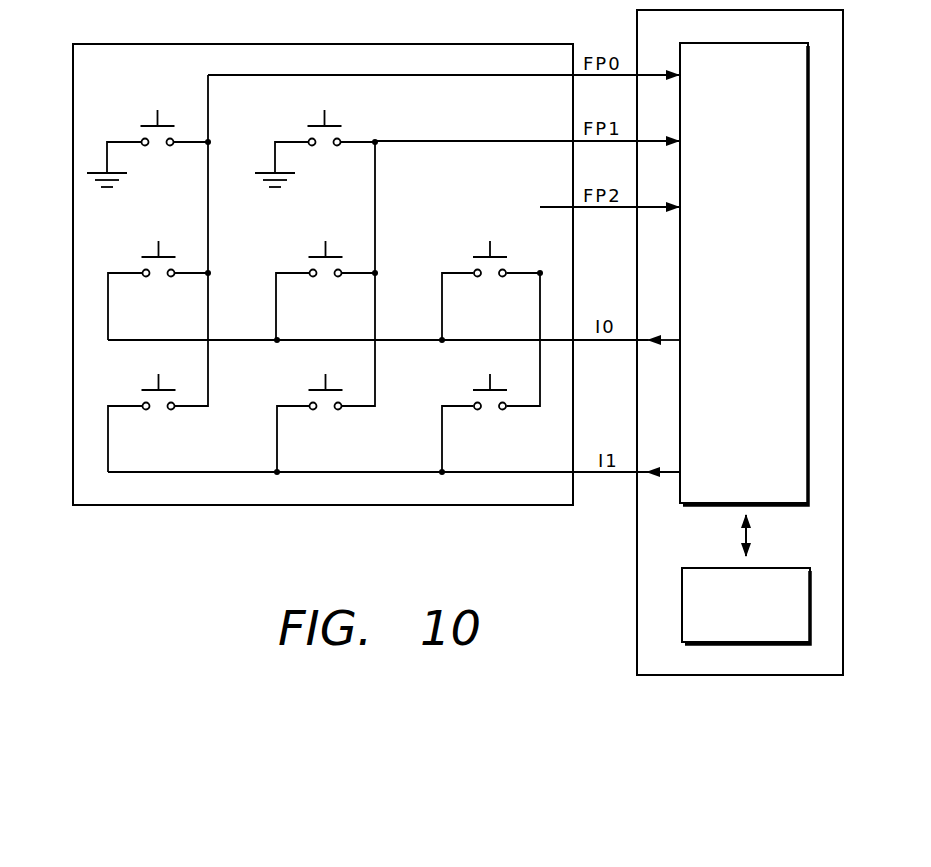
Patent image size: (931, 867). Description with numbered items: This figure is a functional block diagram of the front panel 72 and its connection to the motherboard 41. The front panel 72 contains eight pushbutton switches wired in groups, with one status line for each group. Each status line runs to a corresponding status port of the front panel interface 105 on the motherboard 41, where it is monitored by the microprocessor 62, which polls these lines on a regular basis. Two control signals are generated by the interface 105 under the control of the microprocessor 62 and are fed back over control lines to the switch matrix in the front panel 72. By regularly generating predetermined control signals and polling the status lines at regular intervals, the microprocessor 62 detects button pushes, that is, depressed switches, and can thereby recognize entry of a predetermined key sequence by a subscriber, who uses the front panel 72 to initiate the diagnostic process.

The front panel 72 is at (455, 505).
The motherboard 41 is at (637, 607).
The front panel interface 105 is at (758, 278).
The microprocessor 62 is at (780, 568).